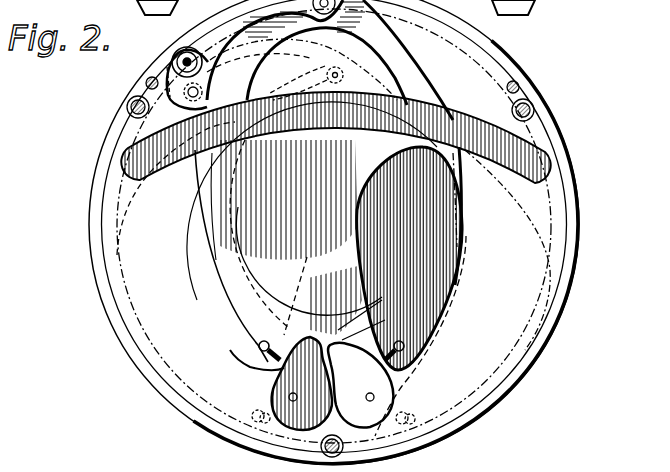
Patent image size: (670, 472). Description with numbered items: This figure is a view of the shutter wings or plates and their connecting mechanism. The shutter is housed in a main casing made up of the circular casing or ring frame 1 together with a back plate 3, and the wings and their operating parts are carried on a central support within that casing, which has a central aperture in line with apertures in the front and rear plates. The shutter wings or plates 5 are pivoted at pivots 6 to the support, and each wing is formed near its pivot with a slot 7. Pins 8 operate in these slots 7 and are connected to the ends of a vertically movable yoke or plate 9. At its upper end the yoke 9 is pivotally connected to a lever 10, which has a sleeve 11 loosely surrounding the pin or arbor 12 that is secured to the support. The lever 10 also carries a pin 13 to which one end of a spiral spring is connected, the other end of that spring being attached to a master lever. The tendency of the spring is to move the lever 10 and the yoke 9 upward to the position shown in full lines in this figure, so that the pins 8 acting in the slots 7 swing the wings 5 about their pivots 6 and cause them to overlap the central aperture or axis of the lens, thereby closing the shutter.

The ring frame 1 is at (445, 6).
The back plate 3 is at (334, 226).
The shutter wings 5 is at (326, 269).
The pivots 6 is at (293, 402).
The slots 7 is at (272, 363).
The pins 8 is at (259, 348).
The yoke 9 is at (473, 200).
The lever 10 is at (258, 9).
The sleeve 11 is at (190, 55).
The arbor 12 is at (183, 57).
The pin 13 is at (200, 90).